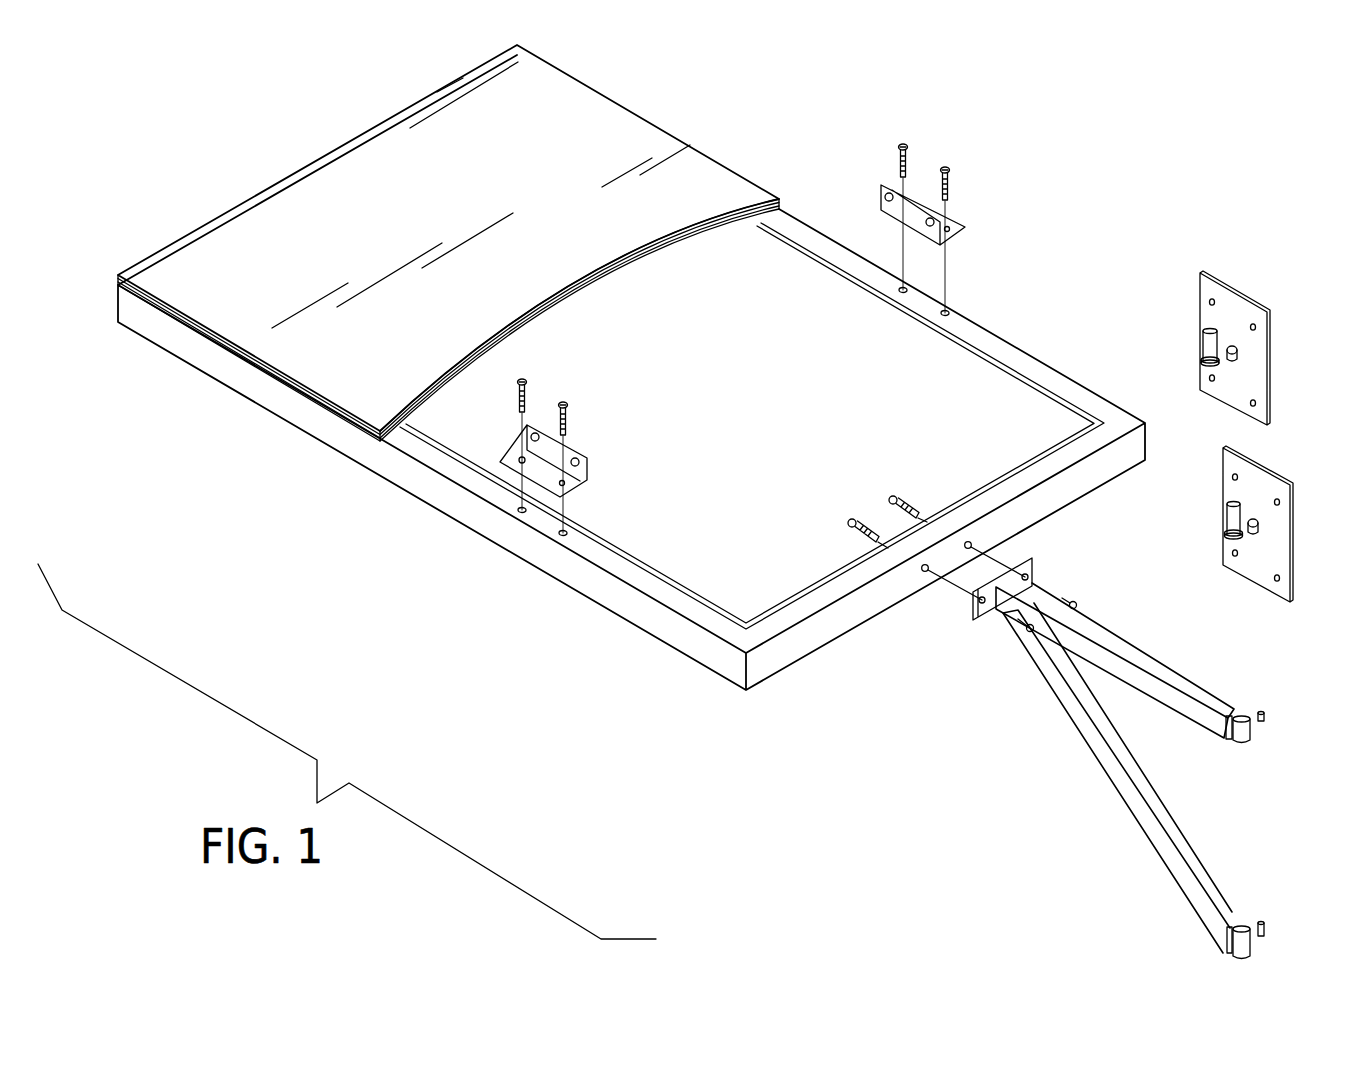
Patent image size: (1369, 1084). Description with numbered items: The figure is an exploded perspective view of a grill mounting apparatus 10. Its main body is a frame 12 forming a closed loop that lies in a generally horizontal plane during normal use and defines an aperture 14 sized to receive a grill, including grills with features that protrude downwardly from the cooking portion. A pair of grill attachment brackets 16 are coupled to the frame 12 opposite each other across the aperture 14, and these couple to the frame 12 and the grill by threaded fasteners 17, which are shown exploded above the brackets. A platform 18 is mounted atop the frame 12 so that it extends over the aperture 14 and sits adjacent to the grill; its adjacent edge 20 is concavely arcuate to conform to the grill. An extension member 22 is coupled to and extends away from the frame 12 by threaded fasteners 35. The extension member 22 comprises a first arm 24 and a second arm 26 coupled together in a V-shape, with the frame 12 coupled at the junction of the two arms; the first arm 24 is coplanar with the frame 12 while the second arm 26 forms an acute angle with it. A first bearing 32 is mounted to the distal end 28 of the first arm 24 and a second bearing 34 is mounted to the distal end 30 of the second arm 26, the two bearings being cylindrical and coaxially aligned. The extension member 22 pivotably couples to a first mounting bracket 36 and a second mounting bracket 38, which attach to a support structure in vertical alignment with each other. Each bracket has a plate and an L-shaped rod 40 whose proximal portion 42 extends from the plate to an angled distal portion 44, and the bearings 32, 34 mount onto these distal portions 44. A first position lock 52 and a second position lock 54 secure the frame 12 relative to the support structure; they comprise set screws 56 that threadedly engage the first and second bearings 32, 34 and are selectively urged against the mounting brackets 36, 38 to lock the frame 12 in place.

The grill mounting apparatus 10 is at (1022, 193).
The frame 12 is at (618, 598).
The aperture 14 is at (968, 447).
The grill attachment bracket 16 is at (948, 236).
The threaded fastener 17 is at (902, 147).
The platform 18 is at (593, 156).
The adjacent edge 20 is at (657, 252).
The extension member 22 is at (950, 735).
The first arm 24 is at (1158, 673).
The second arm 26 is at (1108, 740).
The distal end of the first arm 28 is at (1233, 708).
The distal end of the second arm 30 is at (1232, 913).
The first bearing 32 is at (1237, 742).
The second bearing 34 is at (1250, 948).
The threaded fastener 35 is at (852, 518).
The first mounting bracket 36 is at (1239, 295).
The second mounting bracket 38 is at (1263, 470).
The rod 40 is at (1205, 368).
The proximal portion 42 is at (1233, 360).
The distal portion 44 is at (1208, 346).
The first position lock 52 is at (1267, 710).
The second position lock 54 is at (1258, 918).
The set screw 56 is at (1266, 718).